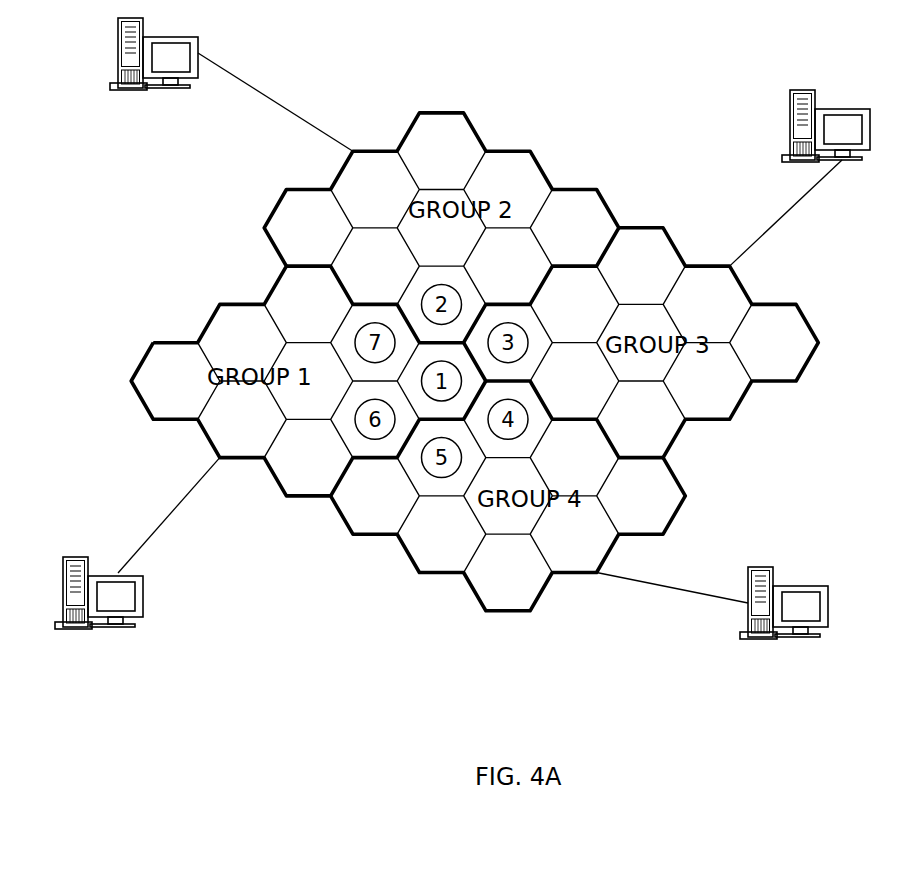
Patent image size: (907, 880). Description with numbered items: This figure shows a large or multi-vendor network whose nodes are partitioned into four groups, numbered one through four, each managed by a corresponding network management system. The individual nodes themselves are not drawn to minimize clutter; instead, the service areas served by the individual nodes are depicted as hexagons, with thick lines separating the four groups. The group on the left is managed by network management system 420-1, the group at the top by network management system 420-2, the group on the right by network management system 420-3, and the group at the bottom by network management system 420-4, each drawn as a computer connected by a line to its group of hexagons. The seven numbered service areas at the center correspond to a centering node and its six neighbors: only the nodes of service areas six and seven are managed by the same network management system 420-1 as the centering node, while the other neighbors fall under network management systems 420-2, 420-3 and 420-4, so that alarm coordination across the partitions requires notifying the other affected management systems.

The network management system 420-1 is at (117, 628).
The network management system 420-2 is at (118, 57).
The network management system 420-3 is at (840, 98).
The network management system 420-4 is at (775, 567).